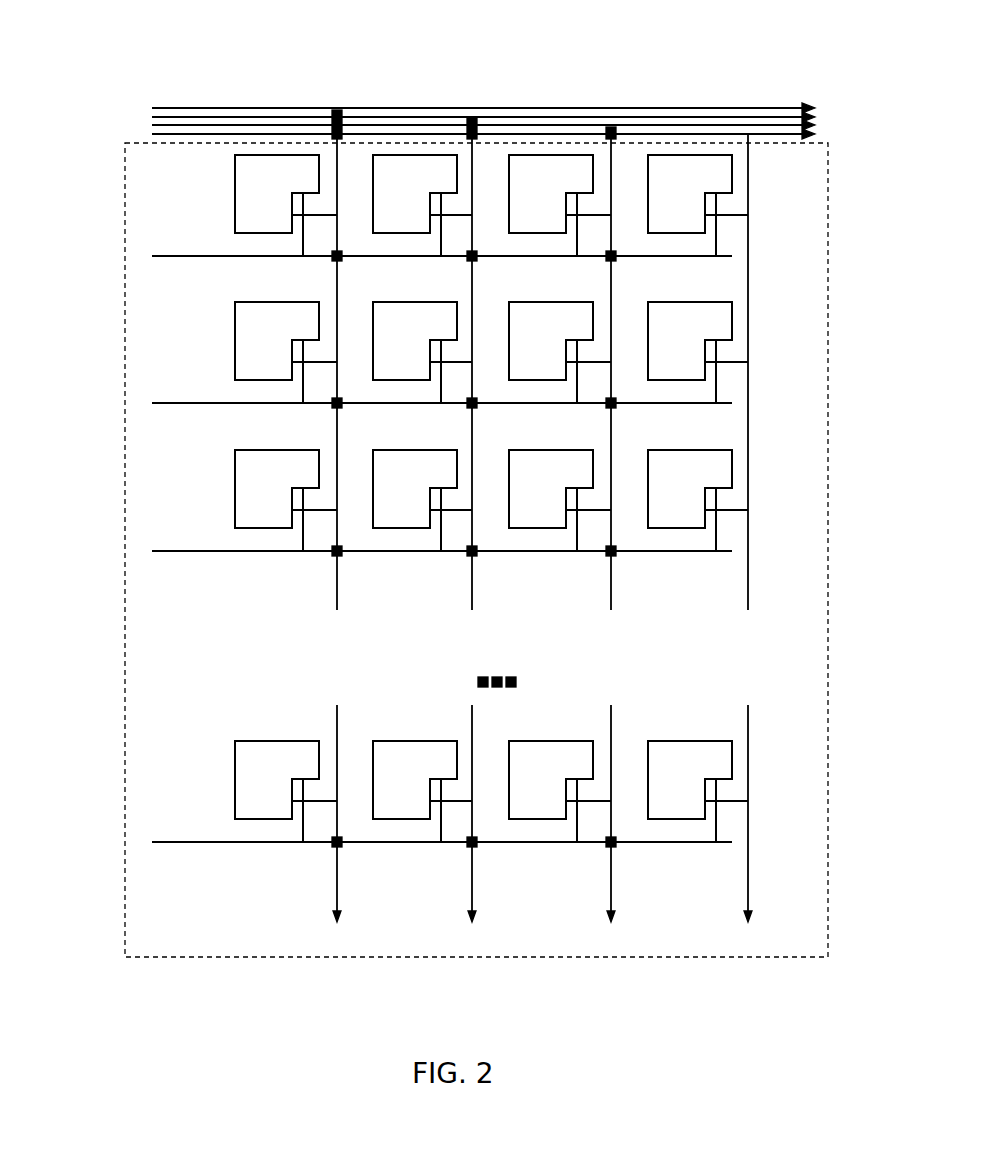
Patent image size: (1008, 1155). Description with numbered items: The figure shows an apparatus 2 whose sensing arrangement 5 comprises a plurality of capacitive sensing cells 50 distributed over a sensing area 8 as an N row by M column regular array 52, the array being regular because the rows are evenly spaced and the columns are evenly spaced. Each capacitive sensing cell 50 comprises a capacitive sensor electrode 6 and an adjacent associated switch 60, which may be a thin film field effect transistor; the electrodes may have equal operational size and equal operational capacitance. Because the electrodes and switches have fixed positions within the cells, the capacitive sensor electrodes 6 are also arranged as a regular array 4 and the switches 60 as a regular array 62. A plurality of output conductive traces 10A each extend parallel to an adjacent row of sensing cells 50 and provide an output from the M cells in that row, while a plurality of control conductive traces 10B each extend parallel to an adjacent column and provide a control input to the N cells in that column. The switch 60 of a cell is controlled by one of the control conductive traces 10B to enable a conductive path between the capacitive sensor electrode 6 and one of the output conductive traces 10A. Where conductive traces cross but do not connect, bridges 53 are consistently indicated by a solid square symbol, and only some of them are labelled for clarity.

The apparatus 2 is at (593, 58).
The regular array of capacitive sensor electrodes 4 is at (692, 958).
The sensing arrangement 5 is at (843, 562).
The capacitive sensor electrode 6 is at (473, 486).
The sensing area 8 is at (340, 674).
The output conductive trace 10A is at (185, 862).
The control conductive trace 10B is at (234, 108).
The capacitive sensing cell 50 is at (665, 830).
The regular array 52 is at (273, 958).
The bridge 53 is at (340, 558).
The switch 60 is at (733, 794).
The regular array of switches 62 is at (467, 958).